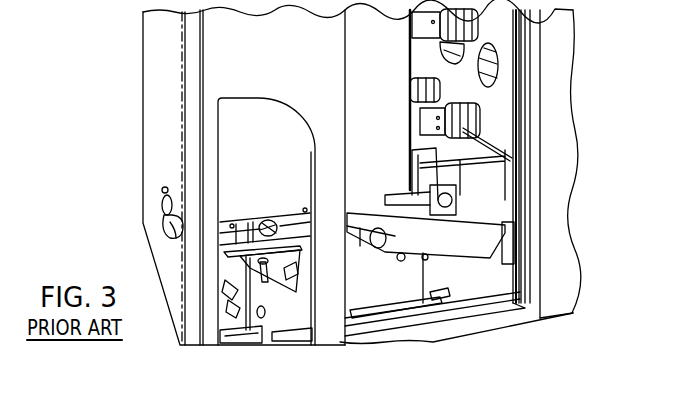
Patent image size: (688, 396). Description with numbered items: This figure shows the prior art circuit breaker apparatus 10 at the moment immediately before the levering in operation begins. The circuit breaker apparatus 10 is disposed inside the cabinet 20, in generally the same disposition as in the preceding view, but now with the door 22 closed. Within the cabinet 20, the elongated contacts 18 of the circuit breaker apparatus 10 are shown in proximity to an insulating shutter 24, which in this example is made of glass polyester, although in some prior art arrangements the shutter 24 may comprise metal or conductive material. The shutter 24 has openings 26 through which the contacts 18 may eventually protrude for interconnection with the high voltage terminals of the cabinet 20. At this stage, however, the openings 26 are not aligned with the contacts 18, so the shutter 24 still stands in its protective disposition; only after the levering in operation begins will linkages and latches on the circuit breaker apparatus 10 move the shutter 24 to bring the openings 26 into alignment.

The circuit breaker apparatus 10 is at (381, 65).
The contacts 18 is at (440, 18).
The cabinet 20 is at (220, 76).
The door 22 is at (150, 76).
The insulating shutter 24 is at (512, 115).
The openings 26 is at (500, 67).